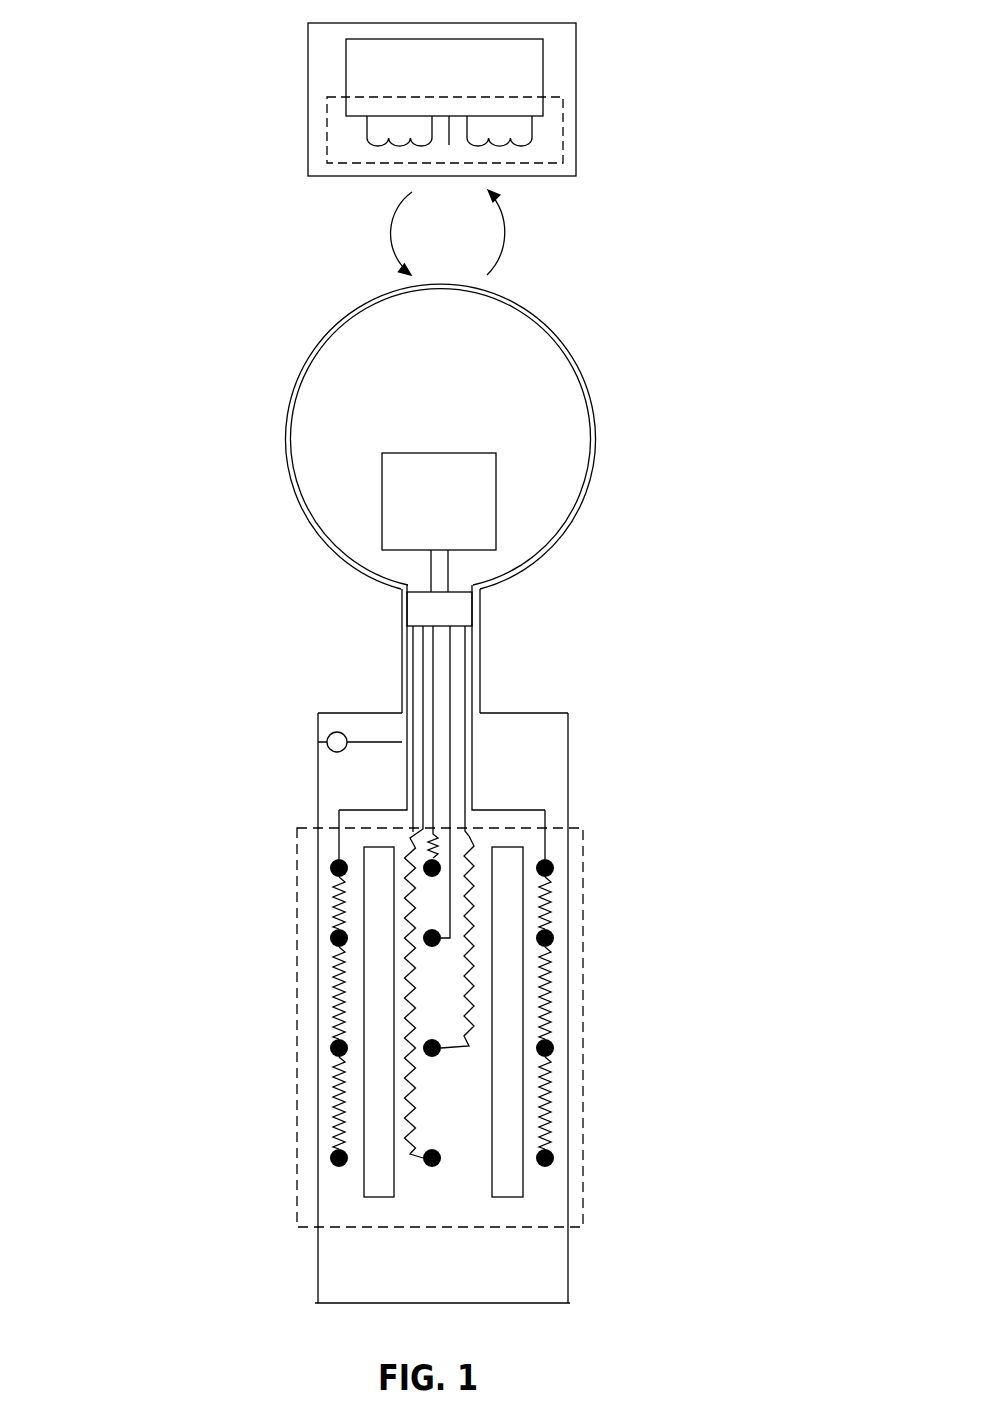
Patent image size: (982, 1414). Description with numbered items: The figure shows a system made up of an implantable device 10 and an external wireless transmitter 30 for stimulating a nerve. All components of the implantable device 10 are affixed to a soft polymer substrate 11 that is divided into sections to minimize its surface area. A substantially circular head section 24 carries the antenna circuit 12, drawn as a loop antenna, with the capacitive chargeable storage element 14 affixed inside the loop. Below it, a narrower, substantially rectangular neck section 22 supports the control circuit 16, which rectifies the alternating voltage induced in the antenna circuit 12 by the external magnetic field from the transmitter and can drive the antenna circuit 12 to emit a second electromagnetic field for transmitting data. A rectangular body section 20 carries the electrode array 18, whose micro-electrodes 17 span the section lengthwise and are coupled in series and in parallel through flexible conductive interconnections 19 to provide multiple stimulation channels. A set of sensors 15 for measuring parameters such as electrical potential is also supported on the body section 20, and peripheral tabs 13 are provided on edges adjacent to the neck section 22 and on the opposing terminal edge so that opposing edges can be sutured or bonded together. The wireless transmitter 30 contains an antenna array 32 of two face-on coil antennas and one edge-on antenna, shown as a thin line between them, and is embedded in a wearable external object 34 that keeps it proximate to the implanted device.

The implantable device 10 is at (101, 323).
The soft polymer substrate 11 is at (568, 750).
The antenna circuit 12 is at (557, 340).
The peripheral tabs 13 is at (355, 712).
The chargeable storage element 14 is at (443, 453).
The sensor 15 is at (318, 743).
The control circuit 16 is at (473, 607).
The electrode 17 is at (330, 1045).
The electrode array 18 is at (582, 845).
The interconnection 19 is at (545, 972).
The body section 20 is at (521, 988).
The neck section 22 is at (571, 694).
The head section 24 is at (544, 438).
The wireless transmitter 30 is at (431, 90).
The antenna array 32 is at (562, 127).
The external object 34 is at (308, 88).